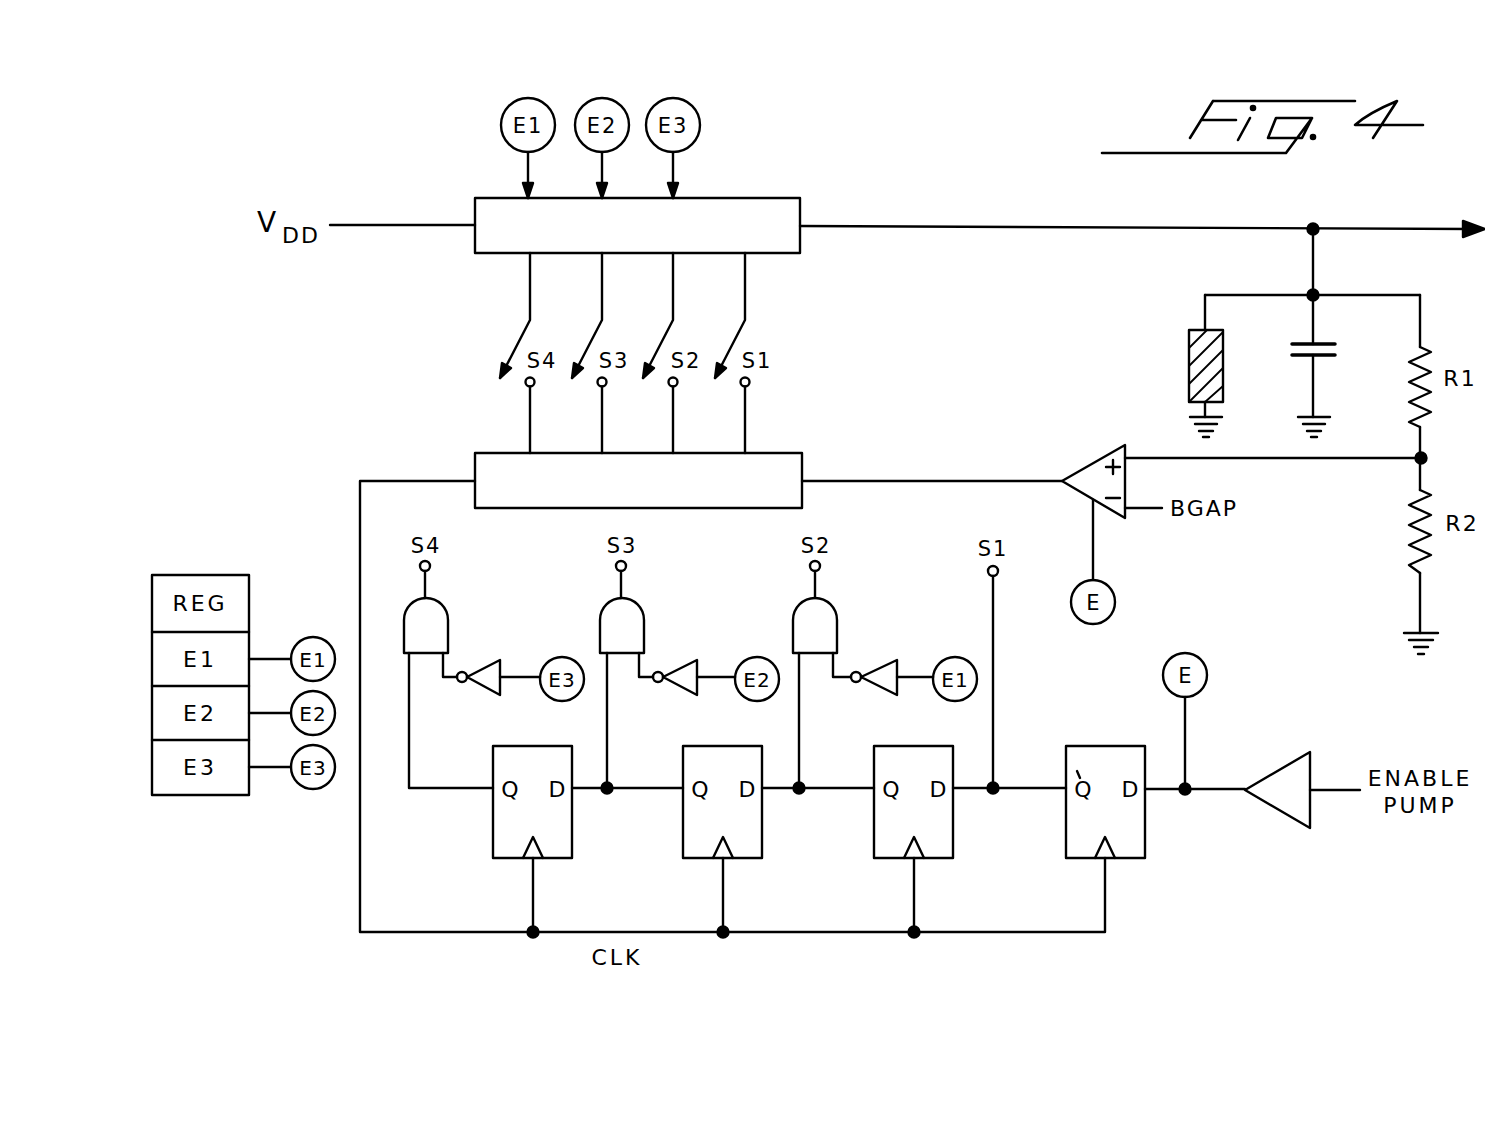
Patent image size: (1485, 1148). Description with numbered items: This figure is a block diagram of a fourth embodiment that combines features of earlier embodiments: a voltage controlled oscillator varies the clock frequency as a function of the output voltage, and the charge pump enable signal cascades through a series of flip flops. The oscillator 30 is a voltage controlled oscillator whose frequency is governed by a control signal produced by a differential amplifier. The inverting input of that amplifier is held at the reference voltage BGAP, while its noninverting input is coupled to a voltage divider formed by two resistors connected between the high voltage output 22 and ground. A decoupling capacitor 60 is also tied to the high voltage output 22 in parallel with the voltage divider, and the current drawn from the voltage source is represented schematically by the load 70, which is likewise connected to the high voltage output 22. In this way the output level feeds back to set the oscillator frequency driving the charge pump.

The high voltage output 22 is at (1378, 229).
The oscillator 30 is at (770, 198).
The decoupling capacitor 60 is at (1330, 360).
The load 70 is at (1189, 357).